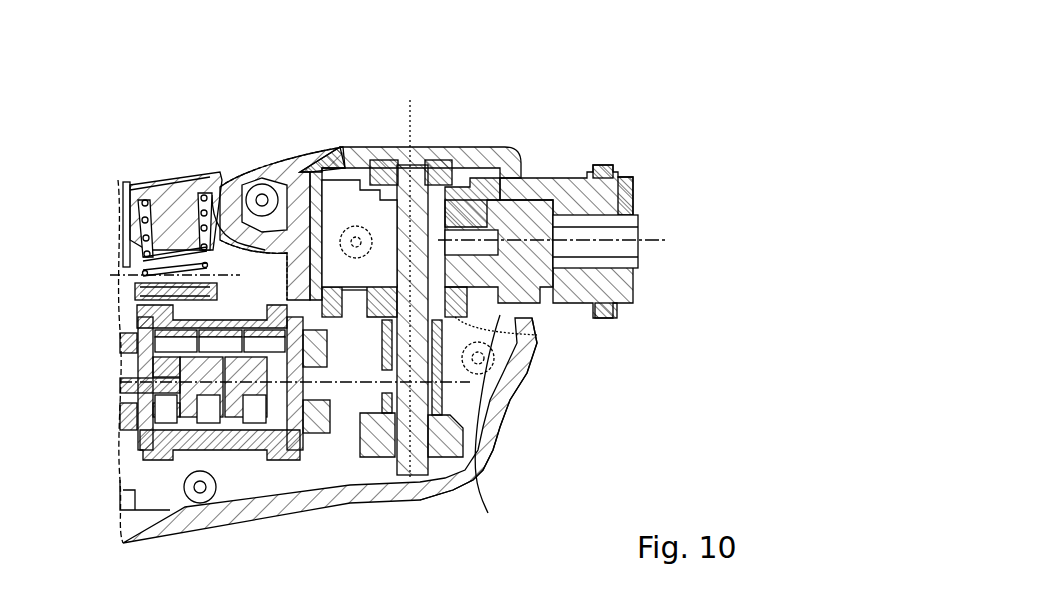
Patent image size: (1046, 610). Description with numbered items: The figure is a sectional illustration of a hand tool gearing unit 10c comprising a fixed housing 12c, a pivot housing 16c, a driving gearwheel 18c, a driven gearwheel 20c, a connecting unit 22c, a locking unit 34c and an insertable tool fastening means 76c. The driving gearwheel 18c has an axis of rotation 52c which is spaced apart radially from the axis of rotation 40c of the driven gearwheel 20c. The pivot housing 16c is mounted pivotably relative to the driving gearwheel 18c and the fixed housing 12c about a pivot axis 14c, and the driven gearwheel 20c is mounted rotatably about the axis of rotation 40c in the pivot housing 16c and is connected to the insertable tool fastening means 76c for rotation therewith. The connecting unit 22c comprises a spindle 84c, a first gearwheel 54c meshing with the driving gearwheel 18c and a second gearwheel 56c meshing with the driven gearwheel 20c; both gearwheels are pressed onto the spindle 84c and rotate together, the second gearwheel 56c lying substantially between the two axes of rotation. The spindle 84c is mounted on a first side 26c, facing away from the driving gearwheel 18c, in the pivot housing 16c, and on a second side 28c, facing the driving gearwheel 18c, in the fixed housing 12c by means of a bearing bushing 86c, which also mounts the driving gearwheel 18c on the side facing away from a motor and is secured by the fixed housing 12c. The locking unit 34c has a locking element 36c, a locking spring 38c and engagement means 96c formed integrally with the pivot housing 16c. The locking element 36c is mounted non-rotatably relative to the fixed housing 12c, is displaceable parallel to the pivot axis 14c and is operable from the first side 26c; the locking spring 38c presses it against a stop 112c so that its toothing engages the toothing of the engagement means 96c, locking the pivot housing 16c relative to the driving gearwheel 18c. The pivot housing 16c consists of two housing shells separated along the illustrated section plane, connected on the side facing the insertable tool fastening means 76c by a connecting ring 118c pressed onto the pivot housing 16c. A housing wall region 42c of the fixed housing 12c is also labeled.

The hand tool gearing unit 10c is at (585, 102).
The fixed housing 12c is at (335, 162).
The pivot axis 14c is at (405, 125).
The pivot housing 16c is at (560, 185).
The driving gearwheel 18c is at (350, 440).
The driven gearwheel 20c is at (478, 205).
The connecting unit 22c is at (428, 135).
The first side 26c is at (230, 97).
The second side 28c is at (437, 508).
The locking unit 34c is at (155, 155).
The locking element 36c is at (178, 195).
The locking spring 38c is at (150, 250).
The axis of rotation 40c is at (660, 230).
The housing wall 42c is at (322, 148).
The axis of rotation 52c is at (455, 388).
The first gearwheel 54c is at (503, 423).
The second gearwheel 56c is at (537, 338).
The insertable tool fastening means 76c is at (625, 205).
The spindle 84c is at (430, 170).
The bearing bushing 86c is at (445, 395).
The engagement means 96c is at (275, 195).
The stop 112c is at (230, 222).
The connecting ring 118c is at (607, 165).